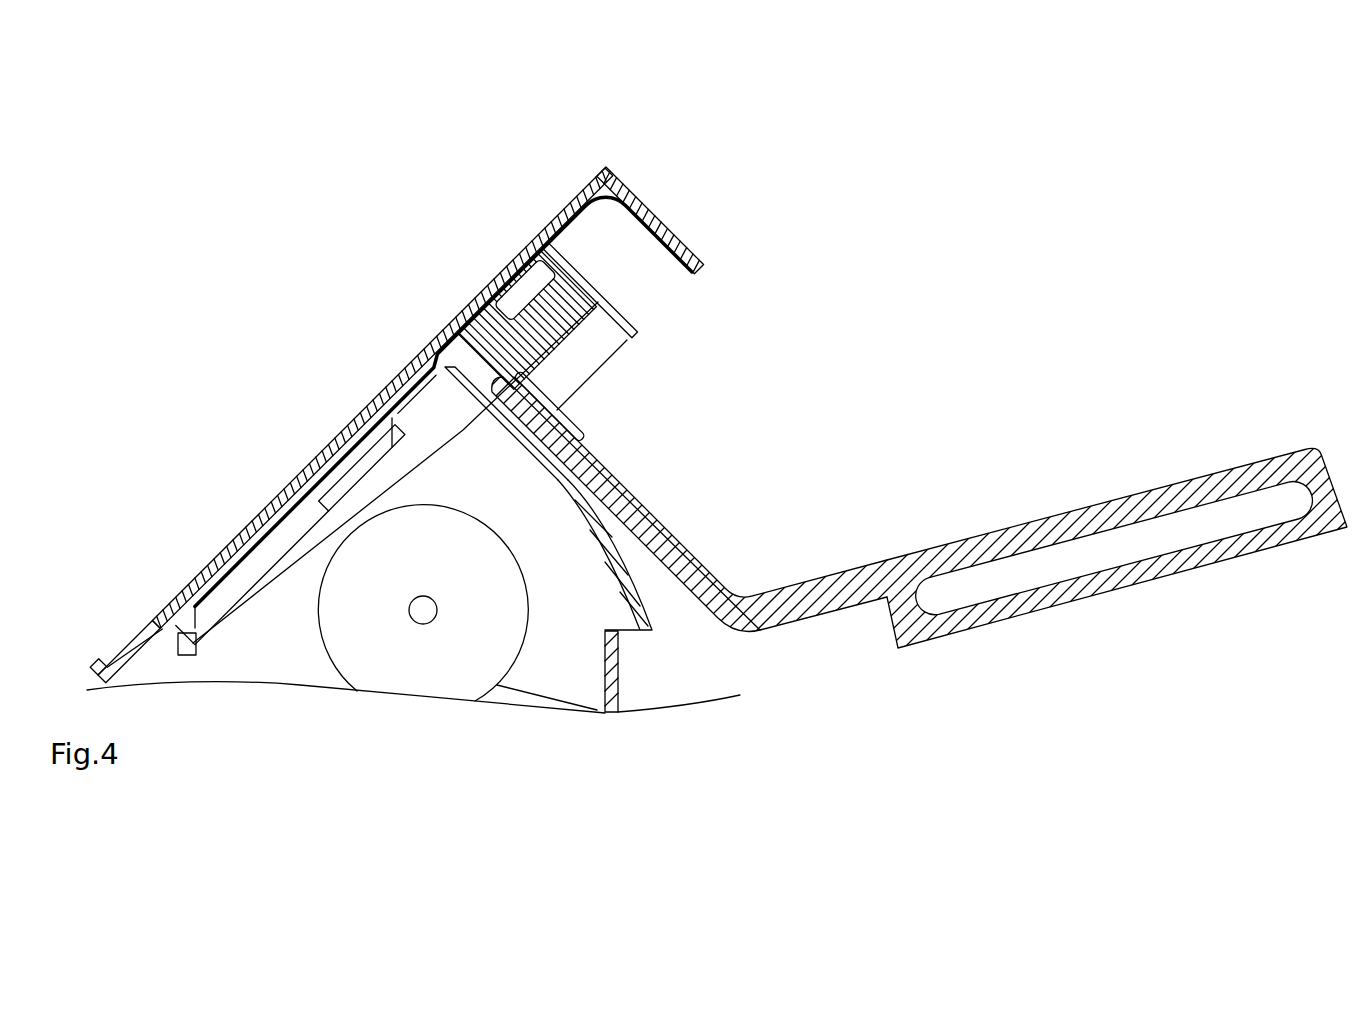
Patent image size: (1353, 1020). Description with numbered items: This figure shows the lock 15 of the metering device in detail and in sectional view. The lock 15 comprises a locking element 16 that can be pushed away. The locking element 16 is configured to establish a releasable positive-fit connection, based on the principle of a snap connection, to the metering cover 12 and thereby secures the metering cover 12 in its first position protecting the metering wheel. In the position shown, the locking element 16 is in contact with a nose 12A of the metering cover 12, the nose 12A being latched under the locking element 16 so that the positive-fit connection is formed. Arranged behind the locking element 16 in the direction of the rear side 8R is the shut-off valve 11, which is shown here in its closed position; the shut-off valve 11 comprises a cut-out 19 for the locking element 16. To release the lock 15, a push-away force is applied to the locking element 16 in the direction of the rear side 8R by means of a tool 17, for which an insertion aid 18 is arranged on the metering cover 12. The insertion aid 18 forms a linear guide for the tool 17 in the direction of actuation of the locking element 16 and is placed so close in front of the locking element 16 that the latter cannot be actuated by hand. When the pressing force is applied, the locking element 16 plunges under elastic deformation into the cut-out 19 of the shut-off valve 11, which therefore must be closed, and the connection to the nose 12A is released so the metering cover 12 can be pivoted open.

The rear side 8R is at (334, 203).
The shut-off valve 11 is at (686, 242).
The metering cover 12 is at (567, 492).
The nose 12A is at (430, 382).
The lock 15 is at (396, 322).
The locking element 16 is at (527, 322).
The tool 17 is at (831, 573).
The insertion aid 18 is at (583, 440).
The cut-out 19 is at (438, 332).